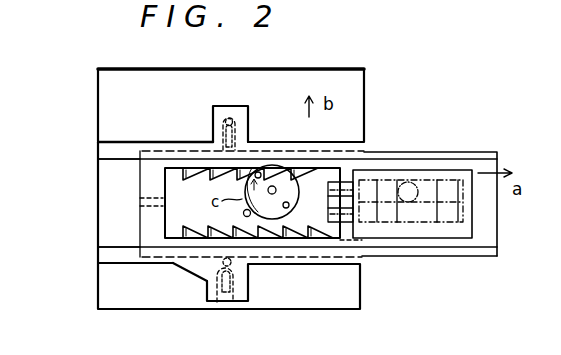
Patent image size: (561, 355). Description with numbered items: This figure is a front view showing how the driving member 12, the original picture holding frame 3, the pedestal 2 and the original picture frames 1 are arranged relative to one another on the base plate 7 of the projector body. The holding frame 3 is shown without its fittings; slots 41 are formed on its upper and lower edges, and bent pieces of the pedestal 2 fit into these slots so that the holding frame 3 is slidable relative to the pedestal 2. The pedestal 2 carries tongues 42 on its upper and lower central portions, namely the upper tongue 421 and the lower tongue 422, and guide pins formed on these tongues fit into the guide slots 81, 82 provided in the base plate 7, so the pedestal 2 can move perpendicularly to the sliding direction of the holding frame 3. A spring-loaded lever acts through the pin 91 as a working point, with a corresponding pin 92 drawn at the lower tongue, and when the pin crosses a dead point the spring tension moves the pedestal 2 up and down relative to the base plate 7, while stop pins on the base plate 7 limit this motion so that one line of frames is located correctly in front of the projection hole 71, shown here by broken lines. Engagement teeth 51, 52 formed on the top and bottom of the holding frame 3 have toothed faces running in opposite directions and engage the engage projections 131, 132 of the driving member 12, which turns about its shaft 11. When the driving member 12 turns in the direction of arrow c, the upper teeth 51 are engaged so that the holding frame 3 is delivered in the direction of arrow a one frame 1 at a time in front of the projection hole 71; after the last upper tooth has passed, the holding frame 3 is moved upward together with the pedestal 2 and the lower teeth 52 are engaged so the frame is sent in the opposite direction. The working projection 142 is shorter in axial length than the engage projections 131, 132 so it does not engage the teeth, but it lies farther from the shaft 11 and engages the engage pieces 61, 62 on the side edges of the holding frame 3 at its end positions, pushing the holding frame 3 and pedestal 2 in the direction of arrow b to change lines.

The original picture frame 1 is at (430, 213).
The pedestal 2 is at (107, 148).
The original picture holding frame 3 is at (140, 172).
The base plate 7 is at (107, 90).
The shaft 11 is at (283, 178).
The driving member 12 is at (279, 220).
The slots 41 is at (462, 153).
The tongues 42 is at (476, 257).
The engagement teeth 51 is at (197, 172).
The engagement teeth 52 is at (254, 238).
The engage piece 61 is at (134, 213).
The engage piece 62 is at (362, 247).
The projection hole 71 is at (414, 180).
The guide slot 81 is at (243, 150).
The guide slot 82 is at (218, 302).
The pin 91 is at (227, 119).
The lower stud 92 is at (239, 303).
The engage projection 131 is at (266, 174).
The engage projection 132 is at (298, 205).
The working projection 142 is at (231, 221).
The tongue 421 is at (218, 117).
The tongue 422 is at (207, 281).